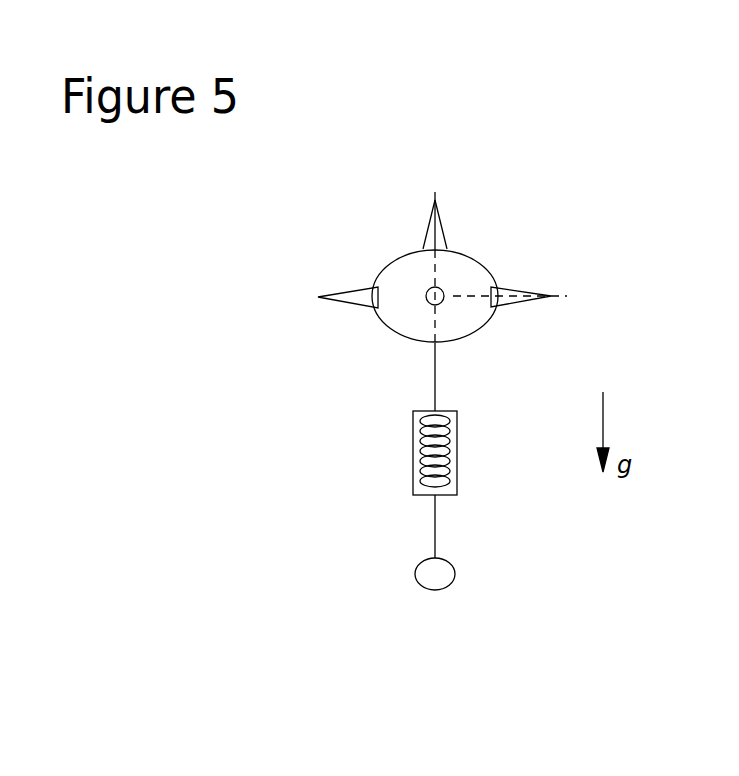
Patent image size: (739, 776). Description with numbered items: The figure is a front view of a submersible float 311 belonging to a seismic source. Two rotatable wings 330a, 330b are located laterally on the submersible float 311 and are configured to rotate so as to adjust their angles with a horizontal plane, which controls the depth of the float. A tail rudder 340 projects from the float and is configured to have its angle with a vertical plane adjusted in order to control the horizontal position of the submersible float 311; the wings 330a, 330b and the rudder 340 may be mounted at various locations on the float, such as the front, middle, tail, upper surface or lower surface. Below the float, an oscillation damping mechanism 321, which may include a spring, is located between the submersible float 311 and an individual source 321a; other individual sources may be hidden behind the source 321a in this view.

The submersible float 311 is at (464, 318).
The tail rudder 340 is at (440, 222).
The rotatable wing 330a is at (525, 290).
The rotatable wing 330b is at (343, 290).
The oscillation damping mechanism 321 is at (413, 467).
The individual source 321a is at (429, 590).